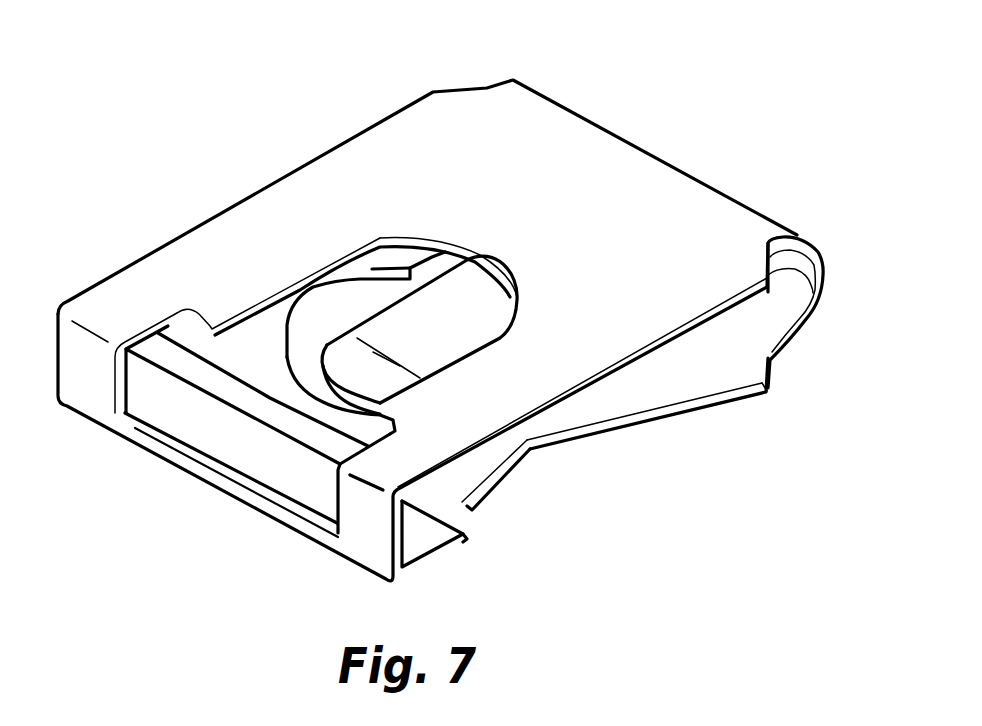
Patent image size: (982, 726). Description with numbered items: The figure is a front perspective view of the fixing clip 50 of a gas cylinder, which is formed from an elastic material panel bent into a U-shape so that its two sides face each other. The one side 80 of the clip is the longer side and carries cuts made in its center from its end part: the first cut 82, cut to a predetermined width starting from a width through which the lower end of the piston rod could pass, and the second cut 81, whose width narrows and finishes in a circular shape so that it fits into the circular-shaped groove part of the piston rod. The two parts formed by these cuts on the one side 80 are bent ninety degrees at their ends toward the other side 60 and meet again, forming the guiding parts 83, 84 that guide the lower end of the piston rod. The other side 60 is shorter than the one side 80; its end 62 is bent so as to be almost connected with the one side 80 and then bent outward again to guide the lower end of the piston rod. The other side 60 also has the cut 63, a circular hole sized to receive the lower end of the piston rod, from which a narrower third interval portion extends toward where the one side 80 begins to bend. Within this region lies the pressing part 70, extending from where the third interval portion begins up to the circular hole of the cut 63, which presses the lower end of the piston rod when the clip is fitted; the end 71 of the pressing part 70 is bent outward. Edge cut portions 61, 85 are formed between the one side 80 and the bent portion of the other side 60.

The fixing clip 50 is at (131, 244).
The other side 60 is at (690, 382).
The edge cut portion 61 is at (800, 328).
The end of the other side 62 is at (473, 485).
The cut 63 is at (355, 278).
The pressing part 70 is at (462, 303).
The end of the pressing part 71 is at (355, 375).
The one side 80 is at (258, 215).
The second cut 81 is at (413, 247).
The first cut 82 is at (187, 310).
The guiding part 83 is at (87, 383).
The guiding part 84 is at (213, 479).
The edge cut portion 85 is at (813, 293).